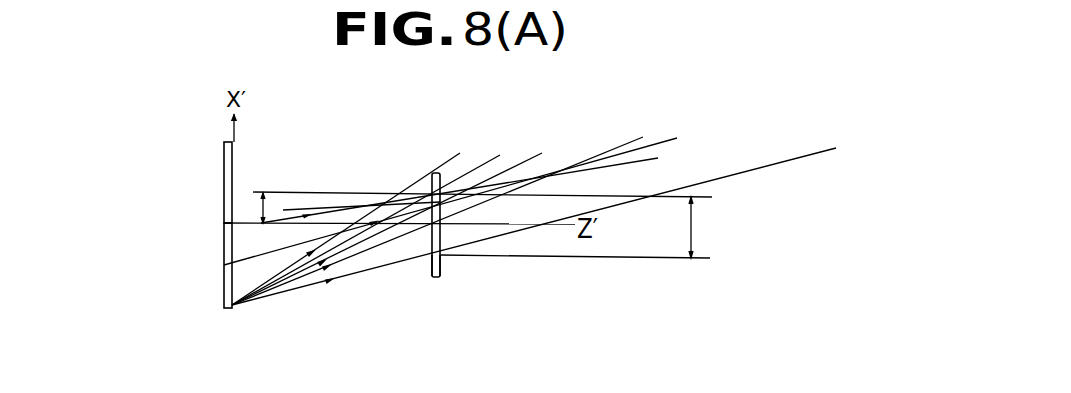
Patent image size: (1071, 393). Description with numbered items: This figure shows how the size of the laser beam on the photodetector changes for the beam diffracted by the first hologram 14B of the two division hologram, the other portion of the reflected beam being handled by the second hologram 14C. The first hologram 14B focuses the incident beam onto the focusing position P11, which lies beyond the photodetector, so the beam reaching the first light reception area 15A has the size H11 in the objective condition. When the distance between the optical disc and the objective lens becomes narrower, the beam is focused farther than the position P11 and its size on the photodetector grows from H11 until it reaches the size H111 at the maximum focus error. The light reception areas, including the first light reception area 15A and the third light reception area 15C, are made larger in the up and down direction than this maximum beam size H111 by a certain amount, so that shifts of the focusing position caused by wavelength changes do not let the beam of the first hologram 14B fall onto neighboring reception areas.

The first hologram 14B is at (226, 281).
The second hologram 14C is at (226, 176).
The first light reception area 15A is at (432, 178).
The third light reception area 15C is at (438, 275).
The beam size H11 is at (251, 208).
The beam size H111 is at (710, 227).
The focusing position P11 is at (556, 190).